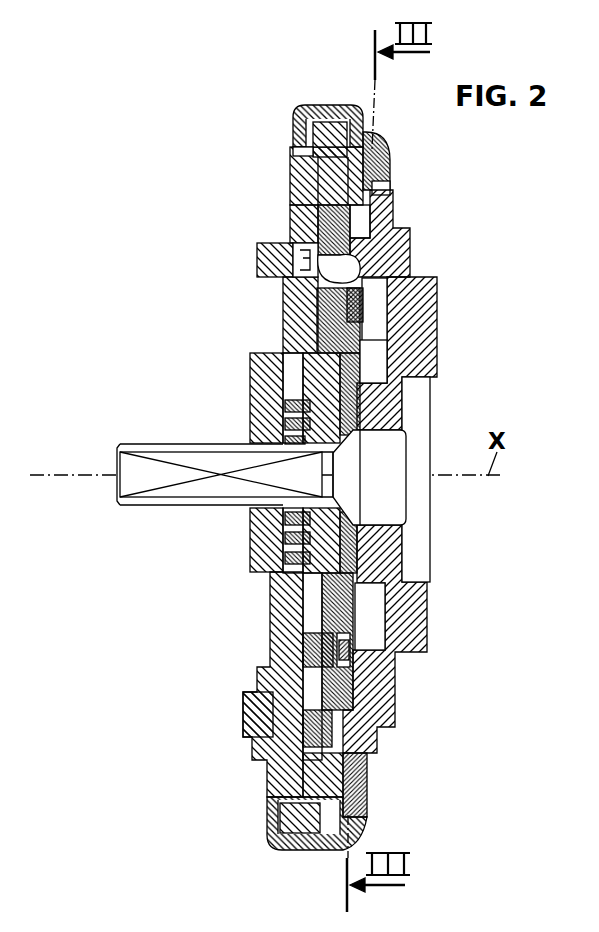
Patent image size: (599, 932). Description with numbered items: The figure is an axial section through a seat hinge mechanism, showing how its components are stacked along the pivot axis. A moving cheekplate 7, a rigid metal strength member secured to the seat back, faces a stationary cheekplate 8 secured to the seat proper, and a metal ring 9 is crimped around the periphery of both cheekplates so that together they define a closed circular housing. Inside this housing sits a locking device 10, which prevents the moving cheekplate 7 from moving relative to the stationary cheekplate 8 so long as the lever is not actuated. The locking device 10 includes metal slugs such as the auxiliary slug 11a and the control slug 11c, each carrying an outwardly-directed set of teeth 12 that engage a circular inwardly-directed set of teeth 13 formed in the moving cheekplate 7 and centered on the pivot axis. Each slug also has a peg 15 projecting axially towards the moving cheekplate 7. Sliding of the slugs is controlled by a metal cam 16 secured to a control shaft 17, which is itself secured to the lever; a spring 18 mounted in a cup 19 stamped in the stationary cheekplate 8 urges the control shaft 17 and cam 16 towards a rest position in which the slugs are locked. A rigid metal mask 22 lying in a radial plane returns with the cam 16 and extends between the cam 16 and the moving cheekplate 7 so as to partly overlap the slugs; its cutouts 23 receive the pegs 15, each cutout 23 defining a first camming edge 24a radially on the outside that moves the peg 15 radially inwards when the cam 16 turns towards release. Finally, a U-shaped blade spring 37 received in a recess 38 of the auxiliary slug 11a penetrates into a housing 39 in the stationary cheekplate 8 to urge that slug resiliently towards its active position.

The moving cheekplate 7 is at (358, 742).
The stationary cheekplate 8 is at (297, 205).
The metal ring 9 is at (310, 104).
The locking device 10 is at (300, 703).
The auxiliary slug 11a is at (333, 228).
The control slug 11c is at (290, 665).
The outwardly-directed set of teeth 12 is at (292, 158).
The inwardly-directed set of teeth 13 is at (380, 157).
The peg 15 is at (365, 326).
The cam 16 is at (273, 612).
The control shaft 17 is at (118, 503).
The spring 18 is at (273, 572).
The cup 19 is at (273, 531).
The mask 22 is at (387, 563).
The cutout 23 is at (374, 338).
The first camming edge 24a is at (366, 315).
The blade spring 37 is at (393, 222).
The recess 38 is at (412, 257).
The housing 39 is at (310, 247).